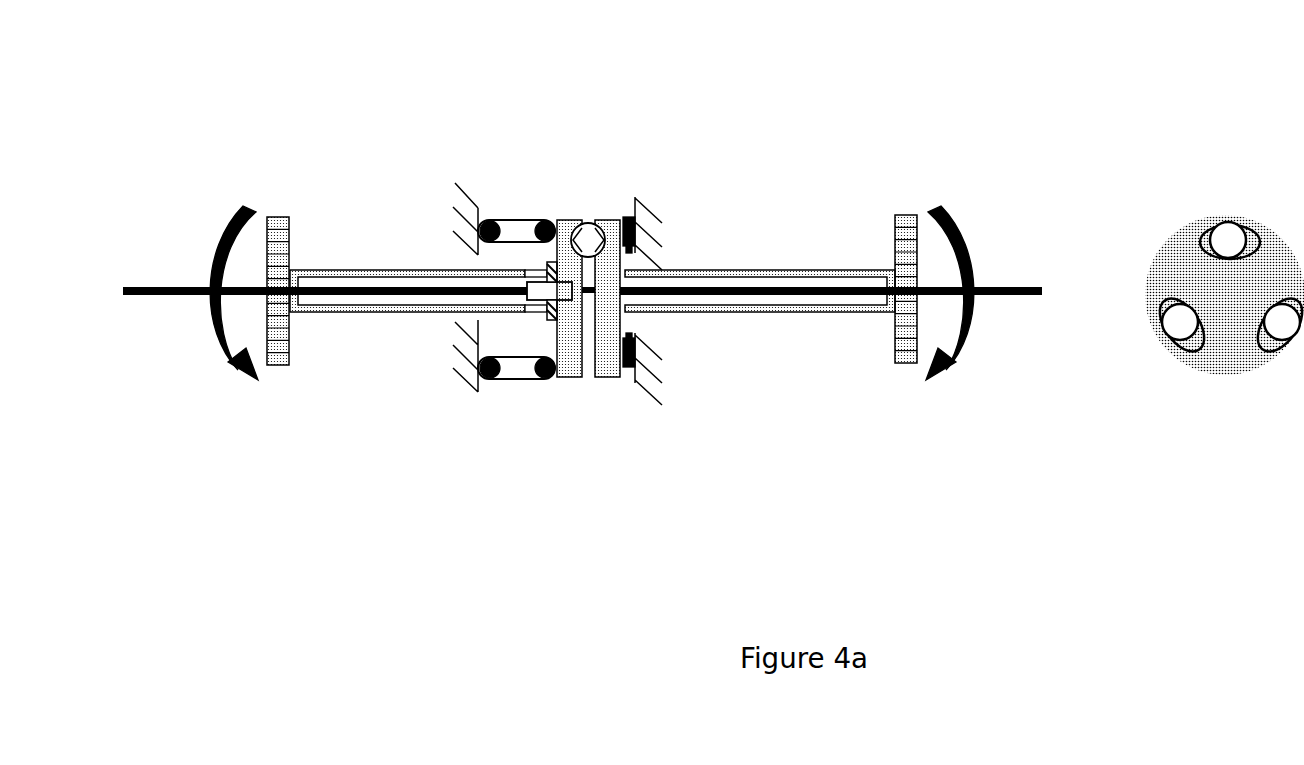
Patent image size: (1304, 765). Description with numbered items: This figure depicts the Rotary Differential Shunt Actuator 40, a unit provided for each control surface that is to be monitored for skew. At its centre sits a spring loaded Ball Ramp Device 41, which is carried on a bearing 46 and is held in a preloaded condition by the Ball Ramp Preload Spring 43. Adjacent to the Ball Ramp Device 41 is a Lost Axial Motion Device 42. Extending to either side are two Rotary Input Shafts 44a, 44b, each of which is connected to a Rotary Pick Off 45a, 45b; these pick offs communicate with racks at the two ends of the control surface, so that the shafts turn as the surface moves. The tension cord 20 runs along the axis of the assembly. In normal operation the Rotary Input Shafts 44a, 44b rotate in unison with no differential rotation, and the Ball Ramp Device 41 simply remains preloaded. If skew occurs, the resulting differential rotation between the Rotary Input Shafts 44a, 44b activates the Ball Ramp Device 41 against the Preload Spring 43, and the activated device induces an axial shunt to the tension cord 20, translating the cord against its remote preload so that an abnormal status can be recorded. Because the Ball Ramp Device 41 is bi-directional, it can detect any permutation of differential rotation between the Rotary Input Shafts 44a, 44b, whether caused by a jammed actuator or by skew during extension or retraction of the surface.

The Rotary Differential Shunt Actuator 40 is at (623, 282).
The tension cord 20 is at (688, 293).
The Ball Ramp Device 41 is at (575, 220).
The Lost Axial Motion Device 42 is at (537, 270).
The Ball Ramp Preload Spring 43 is at (508, 378).
The Rotary Input Shaft 44a is at (385, 312).
The Rotary Input Shaft 44b is at (677, 312).
The Rotary Pick Off 45a is at (278, 367).
The Rotary Pick Off 45b is at (918, 360).
The bearing 46 is at (635, 205).